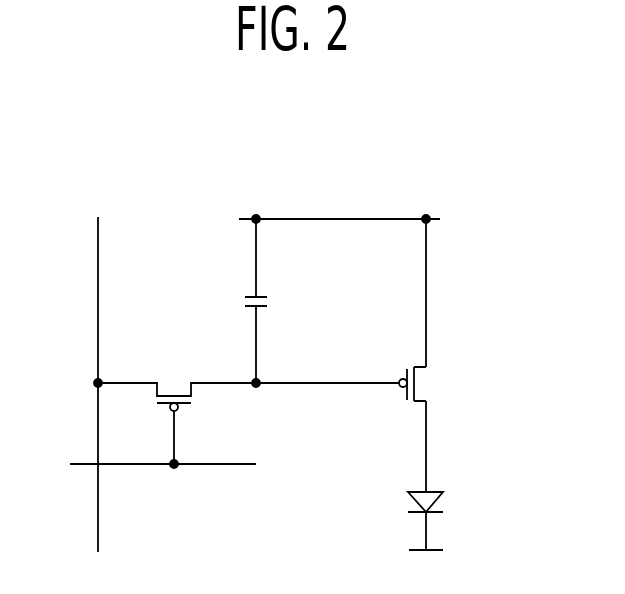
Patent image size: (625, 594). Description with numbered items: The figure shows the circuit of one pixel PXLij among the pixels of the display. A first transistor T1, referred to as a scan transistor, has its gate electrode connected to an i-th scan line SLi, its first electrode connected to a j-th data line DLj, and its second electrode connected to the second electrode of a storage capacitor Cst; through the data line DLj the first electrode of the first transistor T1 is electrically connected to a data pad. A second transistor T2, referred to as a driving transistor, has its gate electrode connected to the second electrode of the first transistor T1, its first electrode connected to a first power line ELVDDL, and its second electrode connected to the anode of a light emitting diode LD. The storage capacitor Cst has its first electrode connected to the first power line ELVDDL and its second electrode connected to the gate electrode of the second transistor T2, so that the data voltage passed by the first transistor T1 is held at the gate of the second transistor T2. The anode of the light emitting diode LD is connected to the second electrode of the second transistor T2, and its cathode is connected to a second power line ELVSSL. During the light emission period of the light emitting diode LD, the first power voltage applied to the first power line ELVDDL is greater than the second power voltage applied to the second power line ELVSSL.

The pixel PXLij is at (463, 146).
The j-th data line DLj is at (96, 367).
The i-th scan line SLi is at (142, 463).
The first power line ELVDDL is at (339, 204).
The second power line ELVSSL is at (430, 567).
The storage capacitor Cst is at (274, 301).
The first transistor T1 is at (177, 410).
The second transistor T2 is at (353, 355).
The light emitting diode LD is at (440, 518).